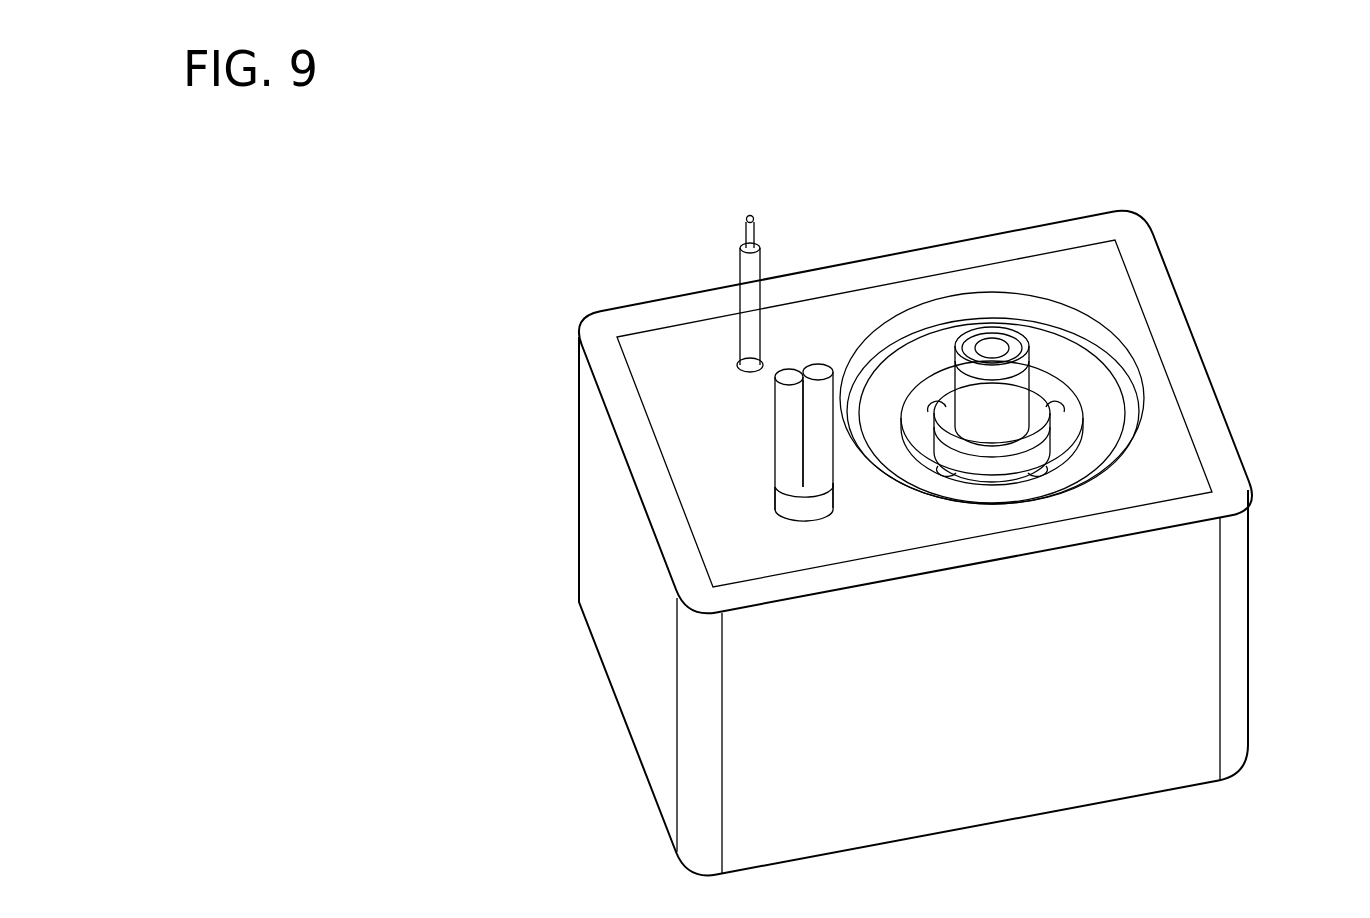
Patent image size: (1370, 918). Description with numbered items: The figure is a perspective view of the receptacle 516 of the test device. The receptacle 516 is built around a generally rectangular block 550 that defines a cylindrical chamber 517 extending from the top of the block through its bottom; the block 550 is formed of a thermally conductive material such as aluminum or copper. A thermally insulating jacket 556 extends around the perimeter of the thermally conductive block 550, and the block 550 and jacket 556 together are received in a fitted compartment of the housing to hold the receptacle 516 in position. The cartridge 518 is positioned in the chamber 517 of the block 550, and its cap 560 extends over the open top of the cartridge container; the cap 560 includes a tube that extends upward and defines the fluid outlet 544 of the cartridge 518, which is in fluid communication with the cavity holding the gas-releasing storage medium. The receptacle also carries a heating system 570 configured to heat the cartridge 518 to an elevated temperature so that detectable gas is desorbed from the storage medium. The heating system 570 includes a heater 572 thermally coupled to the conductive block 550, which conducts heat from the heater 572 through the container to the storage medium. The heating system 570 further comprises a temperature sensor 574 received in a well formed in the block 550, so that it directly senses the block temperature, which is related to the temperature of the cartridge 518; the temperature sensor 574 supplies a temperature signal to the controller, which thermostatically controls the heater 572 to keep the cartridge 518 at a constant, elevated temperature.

The receptacle 516 is at (372, 233).
The cylindrical chamber 517 is at (893, 333).
The cartridge 518 is at (1046, 316).
The fluid outlet 544 is at (992, 343).
The block 550 is at (663, 323).
The thermally insulating jacket 556 is at (1210, 383).
The cap 560 is at (1088, 373).
The heating system 570 is at (776, 532).
The heater 572 is at (783, 421).
The temperature sensor 574 is at (760, 260).